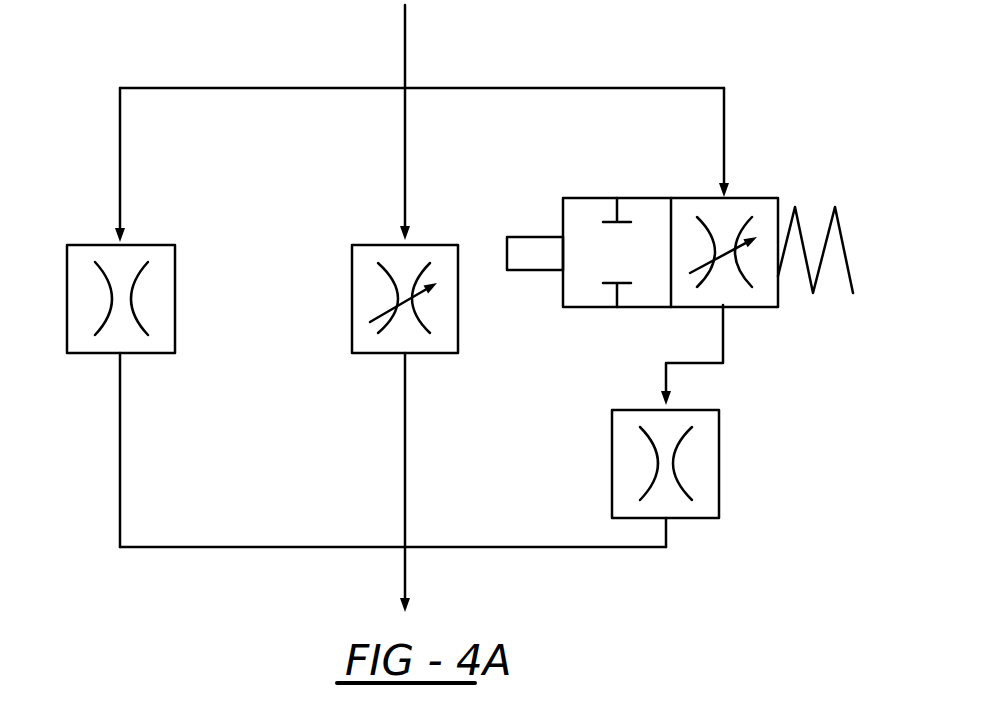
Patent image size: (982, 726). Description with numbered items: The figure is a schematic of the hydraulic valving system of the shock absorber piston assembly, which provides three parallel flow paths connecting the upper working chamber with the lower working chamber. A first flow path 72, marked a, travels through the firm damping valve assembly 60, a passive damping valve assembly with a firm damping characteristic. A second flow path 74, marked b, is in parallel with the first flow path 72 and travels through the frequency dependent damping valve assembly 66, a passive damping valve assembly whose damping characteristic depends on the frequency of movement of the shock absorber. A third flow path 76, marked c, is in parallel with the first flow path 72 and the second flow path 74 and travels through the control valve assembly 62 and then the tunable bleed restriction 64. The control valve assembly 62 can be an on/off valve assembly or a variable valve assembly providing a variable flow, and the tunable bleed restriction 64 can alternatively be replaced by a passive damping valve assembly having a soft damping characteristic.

The firm damping valve assembly 60 is at (67, 308).
The control valve assembly 62 is at (533, 270).
The tunable bleed restriction 64 is at (719, 485).
The frequency dependent damping valve assembly 66 is at (375, 353).
The first flow path 72 is at (120, 163).
The second flow path 74 is at (405, 167).
The third flow path 76 is at (724, 142).